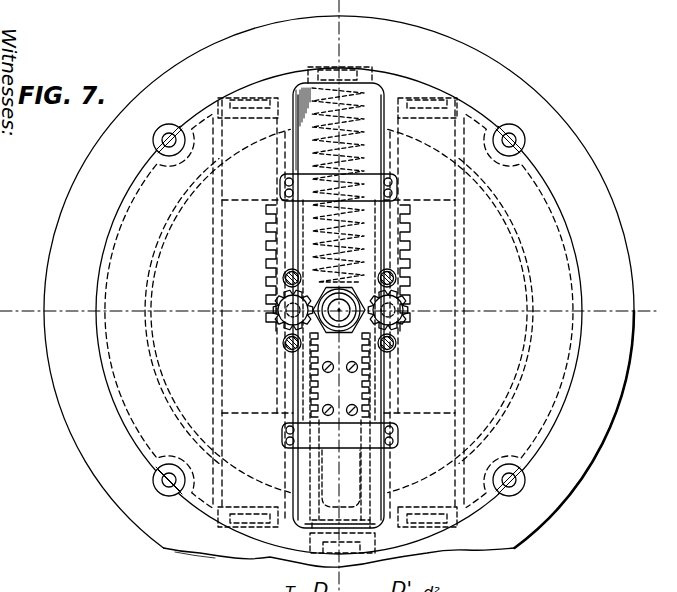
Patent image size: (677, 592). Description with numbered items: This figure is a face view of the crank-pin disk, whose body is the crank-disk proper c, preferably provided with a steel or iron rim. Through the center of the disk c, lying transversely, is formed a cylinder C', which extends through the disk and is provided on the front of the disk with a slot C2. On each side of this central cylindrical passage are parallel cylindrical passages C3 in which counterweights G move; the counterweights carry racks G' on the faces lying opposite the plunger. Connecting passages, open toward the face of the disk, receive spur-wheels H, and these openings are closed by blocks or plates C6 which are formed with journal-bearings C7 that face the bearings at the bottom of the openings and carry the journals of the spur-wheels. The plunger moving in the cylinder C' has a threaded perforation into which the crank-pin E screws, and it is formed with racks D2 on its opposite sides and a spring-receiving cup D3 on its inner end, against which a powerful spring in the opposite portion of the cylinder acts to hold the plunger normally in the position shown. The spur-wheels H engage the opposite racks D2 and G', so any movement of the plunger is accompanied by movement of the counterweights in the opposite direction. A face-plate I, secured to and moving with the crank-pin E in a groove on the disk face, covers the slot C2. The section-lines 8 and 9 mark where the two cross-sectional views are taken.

The section-line 8 8 is at (341, 296).
The section-line 9 9 is at (336, 313).
The cylinder C' is at (339, 291).
The crank-disk proper c is at (339, 312).
The face-plate I is at (307, 212).
The spring-receiving cup D3 is at (407, 233).
The racks of counterweights G' is at (336, 319).
The counterweights G is at (334, 268).
The spring housing F' is at (356, 302).
The slot C2 is at (397, 202).
The parallel passages C3 is at (423, 427).
The spur-wheels H is at (280, 318).
The blocks or plates C6 is at (427, 322).
The journal-bearings C7 is at (420, 353).
The crank-pin E is at (338, 313).
The racks of plunger D2 is at (415, 380).